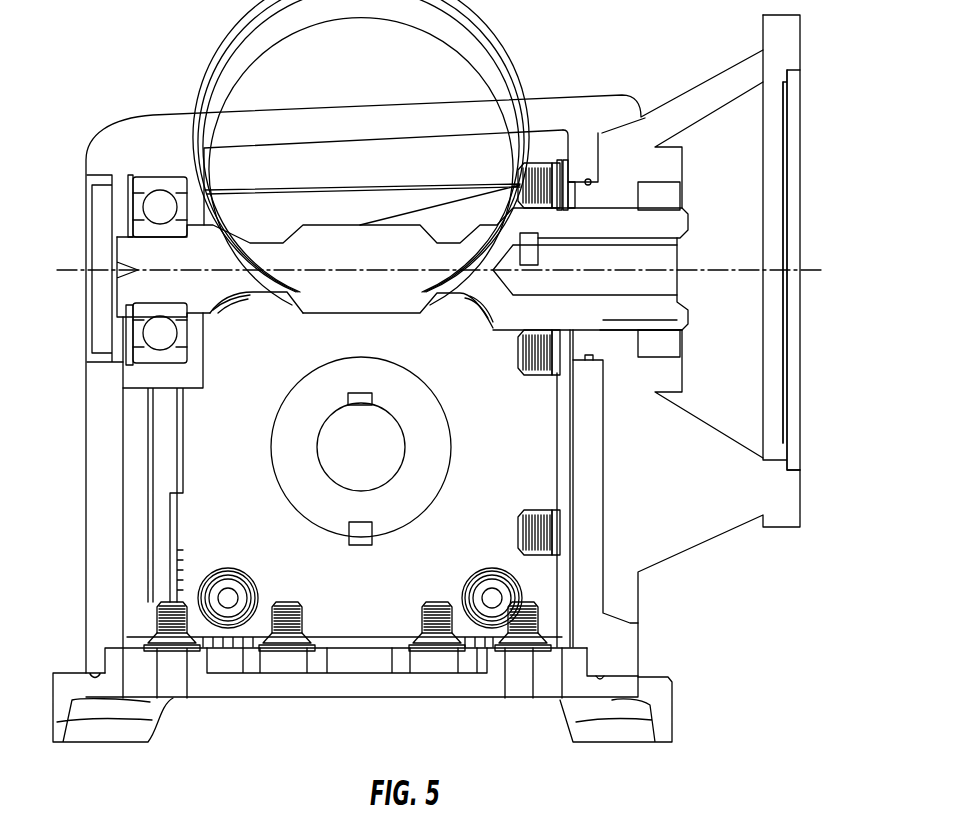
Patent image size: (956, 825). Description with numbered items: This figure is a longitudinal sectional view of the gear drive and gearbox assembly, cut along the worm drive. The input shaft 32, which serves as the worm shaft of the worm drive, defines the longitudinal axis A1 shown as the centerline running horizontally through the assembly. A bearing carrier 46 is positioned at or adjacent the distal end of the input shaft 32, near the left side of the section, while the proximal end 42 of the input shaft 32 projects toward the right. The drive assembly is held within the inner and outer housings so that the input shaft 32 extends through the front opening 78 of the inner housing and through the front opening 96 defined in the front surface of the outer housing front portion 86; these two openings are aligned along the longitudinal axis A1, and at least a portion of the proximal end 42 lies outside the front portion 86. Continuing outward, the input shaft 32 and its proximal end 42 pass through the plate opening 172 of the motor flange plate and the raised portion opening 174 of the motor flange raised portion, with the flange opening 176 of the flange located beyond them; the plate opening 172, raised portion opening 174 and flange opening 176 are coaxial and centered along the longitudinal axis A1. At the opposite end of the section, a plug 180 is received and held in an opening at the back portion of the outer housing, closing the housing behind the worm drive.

The input shaft 32 is at (512, 205).
The proximal end 42 is at (655, 208).
The bearing carrier 46 is at (167, 180).
The front opening 78 is at (567, 210).
The front portion 86 is at (652, 639).
The front opening 96 is at (593, 180).
The plate opening 172 is at (607, 330).
The raised portion opening 174 is at (663, 345).
The flange opening 176 is at (792, 463).
The plug 180 is at (95, 236).
The longitudinal axis A1 is at (457, 273).